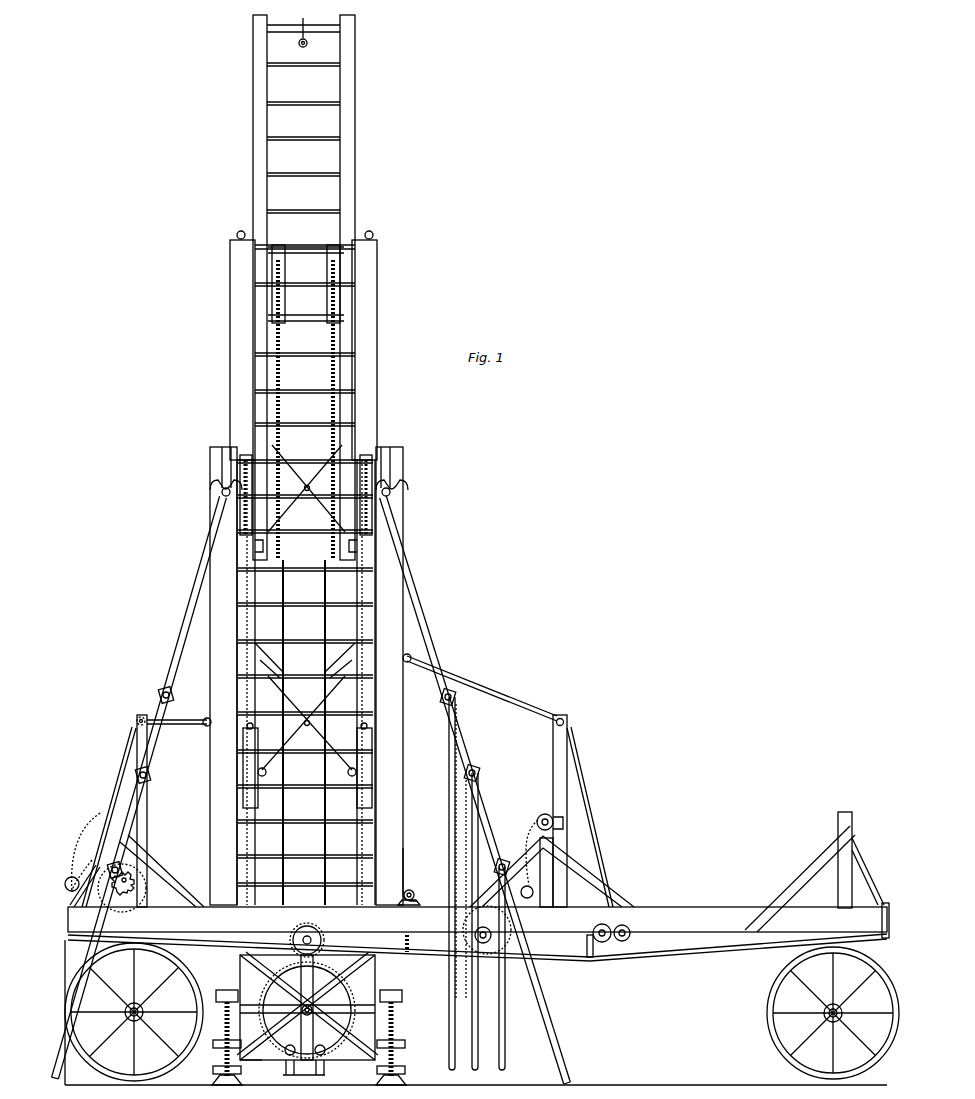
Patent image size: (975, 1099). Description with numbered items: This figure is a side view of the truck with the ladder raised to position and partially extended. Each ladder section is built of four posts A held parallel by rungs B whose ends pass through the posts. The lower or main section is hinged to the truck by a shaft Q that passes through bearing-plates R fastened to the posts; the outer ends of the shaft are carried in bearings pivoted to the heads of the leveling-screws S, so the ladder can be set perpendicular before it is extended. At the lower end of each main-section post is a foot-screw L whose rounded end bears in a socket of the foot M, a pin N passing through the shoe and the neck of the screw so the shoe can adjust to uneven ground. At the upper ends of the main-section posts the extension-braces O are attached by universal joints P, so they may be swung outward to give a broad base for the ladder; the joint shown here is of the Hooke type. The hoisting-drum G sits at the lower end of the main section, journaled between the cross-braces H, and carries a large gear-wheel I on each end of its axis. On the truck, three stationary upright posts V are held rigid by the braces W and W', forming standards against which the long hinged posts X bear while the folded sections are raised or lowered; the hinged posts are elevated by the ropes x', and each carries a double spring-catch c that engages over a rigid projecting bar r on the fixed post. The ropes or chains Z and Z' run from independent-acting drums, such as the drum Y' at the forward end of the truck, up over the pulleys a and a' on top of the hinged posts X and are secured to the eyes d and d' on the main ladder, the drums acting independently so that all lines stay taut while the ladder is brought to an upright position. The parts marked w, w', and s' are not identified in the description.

The posts A is at (306, 568).
The rungs B is at (305, 460).
The ball or universal joint P is at (310, 485).
The extension-braces O is at (311, 790).
The rigid projecting bar r is at (308, 782).
The eye d' is at (480, 679).
The pulley a is at (572, 721).
The pulley a' is at (132, 717).
The eye d is at (179, 713).
The hinged posts X is at (137, 748).
The rope or chain Z is at (590, 817).
The rope or chain Z' is at (109, 817).
The bearing-plates R is at (411, 874).
The shaft Q is at (416, 890).
The leveling-screws S is at (413, 900).
The hanging rods w is at (472, 883).
The braces W is at (487, 879).
The stationary upright posts V is at (696, 860).
The braces W' is at (870, 888).
The double spring-catch c is at (550, 824).
The ropes x' is at (301, 855).
The lever w' is at (85, 885).
The pin N is at (124, 871).
The independent-acting drum Y' is at (311, 924).
The gear-wheel I is at (307, 1007).
The cross-braces H is at (307, 1006).
The hoisting-drum G is at (307, 990).
The foot-screw L is at (306, 1034).
The foot M is at (302, 1083).
The screw s' is at (413, 944).